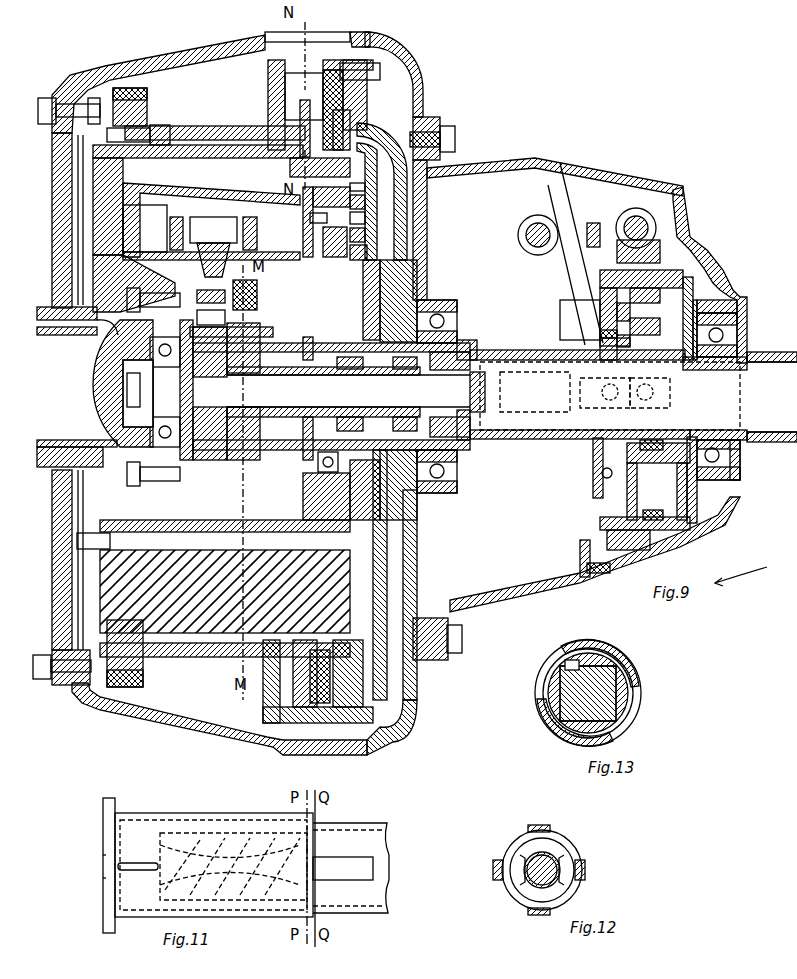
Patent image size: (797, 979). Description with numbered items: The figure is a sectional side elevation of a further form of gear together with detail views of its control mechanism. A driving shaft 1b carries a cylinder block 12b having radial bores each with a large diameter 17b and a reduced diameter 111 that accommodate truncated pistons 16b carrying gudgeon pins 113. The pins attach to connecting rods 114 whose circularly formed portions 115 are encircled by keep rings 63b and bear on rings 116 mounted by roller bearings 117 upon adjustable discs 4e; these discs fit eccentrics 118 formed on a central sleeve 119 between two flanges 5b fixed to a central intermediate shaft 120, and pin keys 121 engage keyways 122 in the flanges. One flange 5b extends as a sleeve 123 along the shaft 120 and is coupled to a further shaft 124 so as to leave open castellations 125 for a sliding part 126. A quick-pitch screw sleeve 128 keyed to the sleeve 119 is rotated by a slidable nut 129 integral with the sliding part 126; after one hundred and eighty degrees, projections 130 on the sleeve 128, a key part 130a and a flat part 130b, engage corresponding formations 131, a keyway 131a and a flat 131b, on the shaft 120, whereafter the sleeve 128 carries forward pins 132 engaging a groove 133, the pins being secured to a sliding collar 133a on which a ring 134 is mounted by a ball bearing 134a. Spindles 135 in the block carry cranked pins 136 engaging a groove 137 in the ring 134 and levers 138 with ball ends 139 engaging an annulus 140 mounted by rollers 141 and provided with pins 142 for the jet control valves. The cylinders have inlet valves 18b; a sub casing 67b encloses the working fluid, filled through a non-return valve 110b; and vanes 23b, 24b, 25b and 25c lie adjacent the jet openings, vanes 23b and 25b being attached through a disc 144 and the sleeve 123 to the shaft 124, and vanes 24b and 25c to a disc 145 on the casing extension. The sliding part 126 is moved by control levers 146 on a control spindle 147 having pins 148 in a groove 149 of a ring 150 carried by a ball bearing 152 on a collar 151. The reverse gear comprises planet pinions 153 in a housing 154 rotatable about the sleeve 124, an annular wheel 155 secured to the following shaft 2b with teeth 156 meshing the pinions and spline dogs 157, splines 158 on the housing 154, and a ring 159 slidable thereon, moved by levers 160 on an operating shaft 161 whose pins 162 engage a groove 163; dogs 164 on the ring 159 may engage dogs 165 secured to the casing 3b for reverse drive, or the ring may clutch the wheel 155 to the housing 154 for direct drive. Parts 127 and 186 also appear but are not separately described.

In FIG. 9, the driving shaft 1b is at (50, 433).
In FIG. 9, the following shaft 2b is at (737, 408).
In FIG. 9, the casing 3b is at (400, 53).
In FIG. 9, the adjustable discs 4e is at (258, 391).
In FIG. 9, the flanges 5b is at (157, 365).
In FIG. 11, the flanges 5b is at (110, 800).
In FIG. 9, the cylinder block 12b is at (134, 283).
In FIG. 9, the truncated pistons 16b is at (230, 190).
In FIG. 9, the large diameter of bore 17b is at (117, 183).
In FIG. 9, the inlet valves 18b is at (210, 135).
In FIG. 9, the vane 23b is at (322, 110).
In FIG. 9, the vane 24b is at (325, 85).
In FIG. 9, the vane 25b is at (283, 95).
In FIG. 9, the vane 25c is at (283, 77).
In FIG. 9, the keep rings 63b is at (115, 335).
In FIG. 9, the sub casing 67b is at (283, 110).
In FIG. 9, the non-return valve 110b is at (266, 50).
In FIG. 9, the reduced diameter of bore 111 is at (153, 228).
In FIG. 9, the gudgeon pins 113 is at (222, 230).
In FIG. 9, the connecting rods 114 is at (242, 283).
In FIG. 9, the circularly formed portions 115 is at (257, 295).
In FIG. 9, the rings 116 is at (257, 312).
In FIG. 9, the roller bearings 117 is at (273, 332).
In FIG. 9, the eccentrics 118 is at (171, 390).
In FIG. 9, the eccentric sleeve 119 is at (348, 392).
In FIG. 9, the central intermediate shaft 120 is at (305, 430).
In FIG. 12, the central intermediate shaft 120 is at (538, 880).
In FIG. 9, the pin keys 121 is at (212, 393).
In FIG. 9, the keyways 122 is at (247, 522).
In FIG. 9, the sleeve 123 is at (466, 478).
In FIG. 13, the sleeve 123 is at (549, 690).
In FIG. 11, the sleeve 123 is at (148, 815).
In FIG. 9, the further shaft 124 is at (518, 440).
In FIG. 13, the further shaft 124 is at (551, 710).
In FIG. 11, the further shaft 124 is at (353, 906).
In FIG. 13, the open castellations 125 is at (563, 663).
In FIG. 9, the sliding part 126 is at (535, 392).
In FIG. 11, the sliding part 126 is at (380, 905).
In FIG. 12, the sliding part 126 is at (552, 829).
In FIG. 9, the tube wall 127 is at (492, 350).
In FIG. 9, the screw sleeve 128 is at (455, 430).
In FIG. 11, the screw sleeve 128 is at (230, 885).
In FIG. 12, the screw sleeve 128 is at (555, 840).
In FIG. 9, the slidable nut 129 is at (476, 334).
In FIG. 9, the collar 130 is at (478, 385).
In FIG. 12, the key part 130a is at (522, 880).
In FIG. 12, the flat part 130b is at (566, 882).
In FIG. 9, the ring 131 is at (465, 430).
In FIG. 12, the keyway 131a is at (585, 862).
In FIG. 12, the flat 131b is at (503, 858).
In FIG. 9, the pins 132 is at (318, 466).
In FIG. 9, the groove 133 is at (385, 345).
In FIG. 9, the sliding collar 133a is at (405, 470).
In FIG. 9, the ring 134 is at (449, 388).
In FIG. 9, the ball bearing 134a is at (330, 478).
In FIG. 9, the spindles 135 is at (303, 243).
In FIG. 9, the cranked pins 136 is at (445, 300).
In FIG. 9, the groove 137 is at (385, 530).
In FIG. 9, the levers 138 is at (365, 125).
In FIG. 9, the ball ends 139 is at (365, 240).
In FIG. 9, the annulus 140 is at (365, 225).
In FIG. 9, the rollers 141 is at (367, 275).
In FIG. 9, the pins 142 is at (355, 205).
In FIG. 9, the disc 144 is at (365, 255).
In FIG. 9, the disc 145 is at (365, 213).
In FIG. 9, the control levers 146 is at (560, 300).
In FIG. 9, the control spindle 147 is at (524, 235).
In FIG. 9, the pins 148 is at (604, 393).
In FIG. 9, the groove 149 is at (628, 305).
In FIG. 9, the ring 150 is at (612, 330).
In FIG. 9, the collar 151 is at (607, 344).
In FIG. 9, the ball bearing 152 is at (730, 335).
In FIG. 9, the planet pinions 153 is at (700, 306).
In FIG. 9, the housing 154 is at (685, 290).
In FIG. 9, the annular wheel 155 is at (693, 328).
In FIG. 9, the teeth 156 is at (693, 298).
In FIG. 9, the spline dogs 157 is at (653, 265).
In FIG. 9, the splines 158 is at (598, 240).
In FIG. 9, the ring 159 is at (648, 255).
In FIG. 9, the levers 160 is at (616, 245).
In FIG. 9, the operating shaft 161 is at (640, 222).
In FIG. 9, the pins 162 is at (655, 393).
In FIG. 9, the groove 163 is at (637, 552).
In FIG. 9, the dogs 164 is at (637, 303).
In FIG. 9, the dogs 165 is at (571, 242).
In FIG. 13, the ring 186 is at (600, 656).